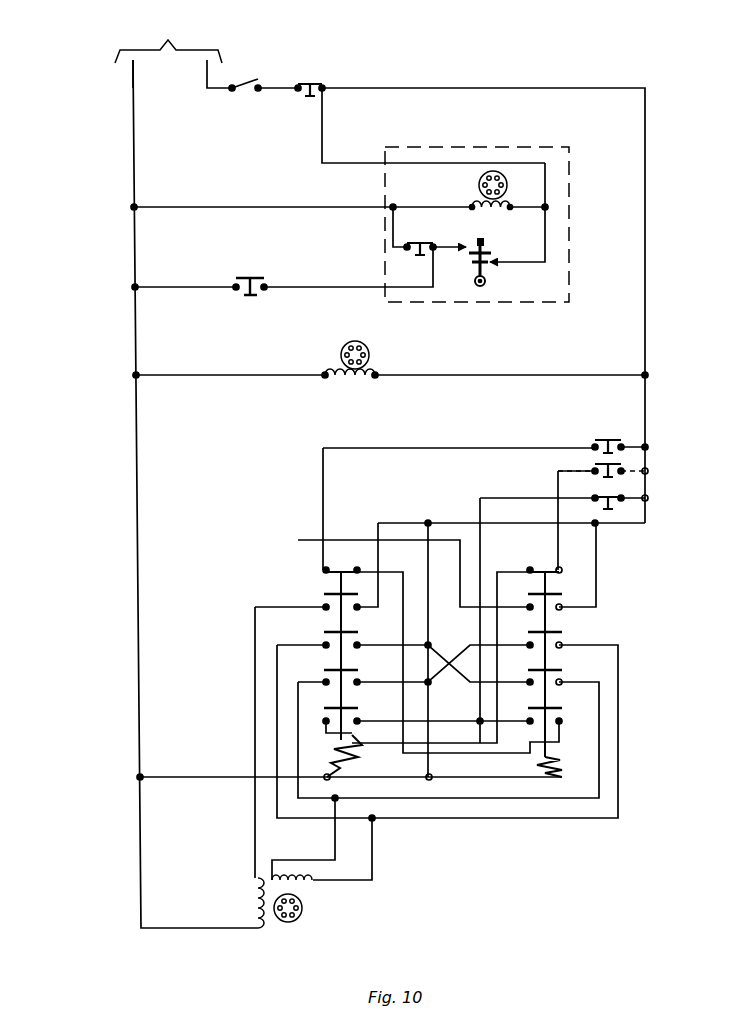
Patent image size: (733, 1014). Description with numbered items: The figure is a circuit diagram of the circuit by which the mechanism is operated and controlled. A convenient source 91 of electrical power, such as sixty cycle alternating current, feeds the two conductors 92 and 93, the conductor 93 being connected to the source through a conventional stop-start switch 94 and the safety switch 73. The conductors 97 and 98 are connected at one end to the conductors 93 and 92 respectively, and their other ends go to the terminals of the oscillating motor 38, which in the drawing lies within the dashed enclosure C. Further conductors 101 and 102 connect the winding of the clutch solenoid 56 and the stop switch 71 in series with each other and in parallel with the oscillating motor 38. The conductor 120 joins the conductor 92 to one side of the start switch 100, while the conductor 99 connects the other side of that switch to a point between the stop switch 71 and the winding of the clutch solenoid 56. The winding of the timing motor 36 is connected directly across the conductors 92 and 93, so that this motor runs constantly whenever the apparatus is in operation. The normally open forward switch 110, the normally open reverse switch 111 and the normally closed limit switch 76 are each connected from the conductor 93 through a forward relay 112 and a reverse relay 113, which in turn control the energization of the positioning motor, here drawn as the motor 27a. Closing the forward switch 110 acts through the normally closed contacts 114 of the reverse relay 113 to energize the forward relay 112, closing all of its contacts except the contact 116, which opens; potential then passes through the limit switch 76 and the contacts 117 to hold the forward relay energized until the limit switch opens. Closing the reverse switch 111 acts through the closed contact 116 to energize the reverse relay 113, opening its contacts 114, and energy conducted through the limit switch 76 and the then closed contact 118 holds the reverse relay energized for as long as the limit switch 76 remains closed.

The source of electrical power 91 is at (45, 72).
The conductor 92 is at (133, 270).
The conductor 93 is at (645, 163).
The stop-start switch 94 is at (237, 87).
The safety switch 73 is at (307, 83).
The conductor 97 is at (322, 150).
The conductor 98 is at (168, 207).
The conductor 99 is at (290, 289).
The start switch 100 is at (252, 278).
The conductor 101 is at (548, 240).
The conductor 102 is at (392, 244).
The conductor 120 is at (150, 286).
The stop switch 71 is at (412, 246).
The oscillating motor 38 is at (470, 202).
The clutch control unit C is at (482, 143).
The clutch solenoid 56 is at (490, 271).
The timing motor 36 is at (372, 362).
The forward switch 110 is at (612, 440).
The reverse switch 111 is at (612, 464).
The limit switch 76 is at (612, 496).
The contacts of the reverse relay 114 is at (347, 568).
The contact of the forward relay 116 is at (556, 568).
The contacts 117 is at (558, 708).
The contact 118 is at (343, 710).
The reverse relay 113 is at (360, 757).
The forward relay 112 is at (528, 763).
The drive motor 27a is at (275, 927).